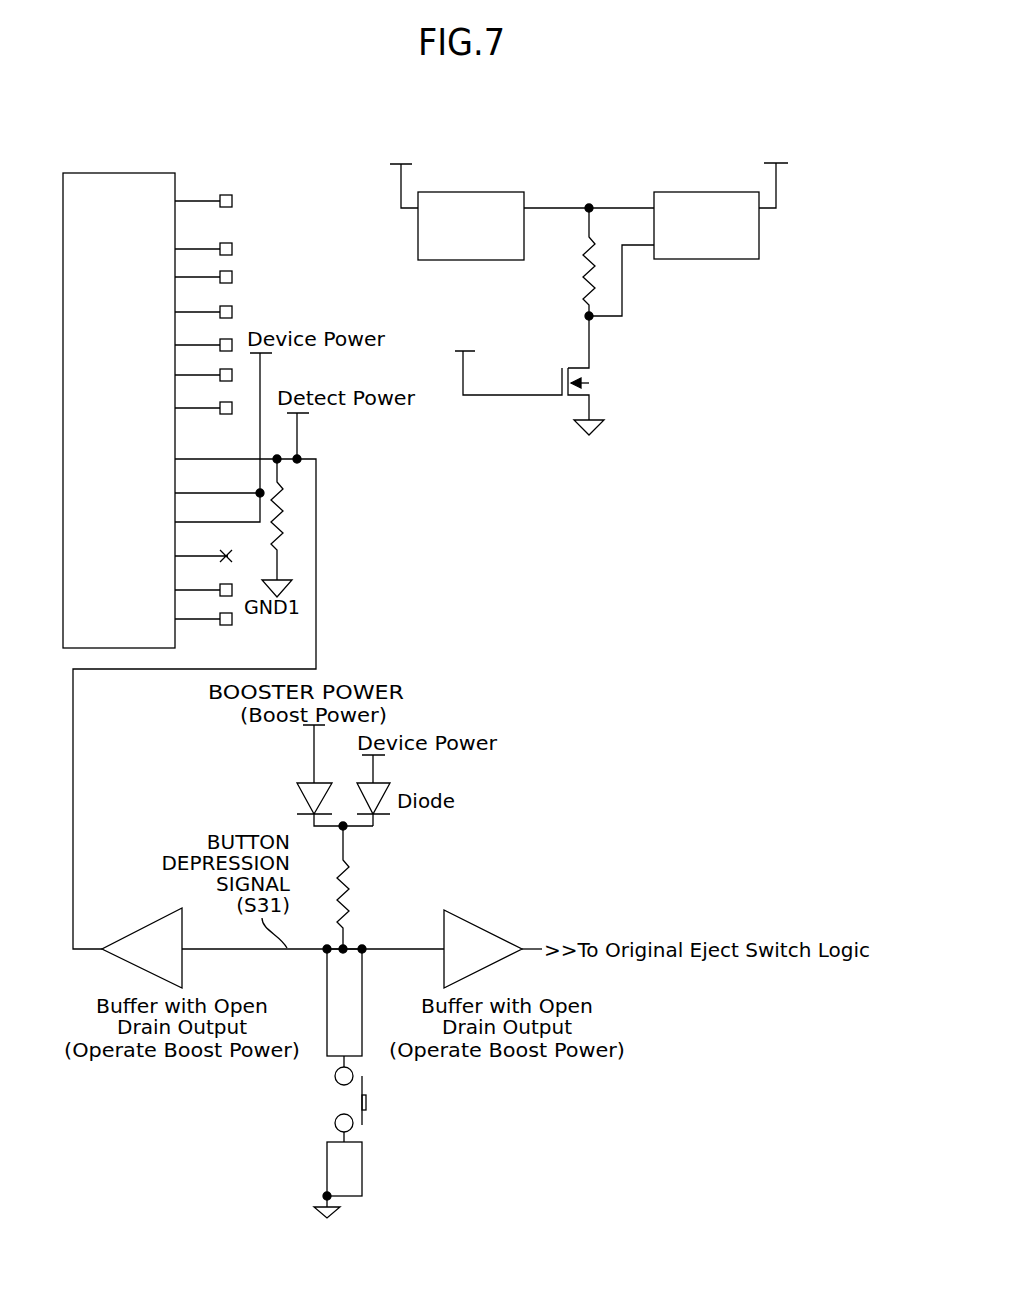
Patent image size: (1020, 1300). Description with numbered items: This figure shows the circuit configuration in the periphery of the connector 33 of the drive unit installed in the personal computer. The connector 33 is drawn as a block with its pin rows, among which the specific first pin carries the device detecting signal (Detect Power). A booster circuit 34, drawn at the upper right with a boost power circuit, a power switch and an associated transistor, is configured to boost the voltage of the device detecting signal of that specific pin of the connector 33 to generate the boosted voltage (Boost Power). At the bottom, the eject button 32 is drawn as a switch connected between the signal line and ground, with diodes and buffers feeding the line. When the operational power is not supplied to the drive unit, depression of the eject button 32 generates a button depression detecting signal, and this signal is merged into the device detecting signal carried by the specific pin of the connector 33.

The connector 33 is at (100, 172).
The booster circuit 34 is at (580, 140).
The eject button 32 is at (377, 1099).